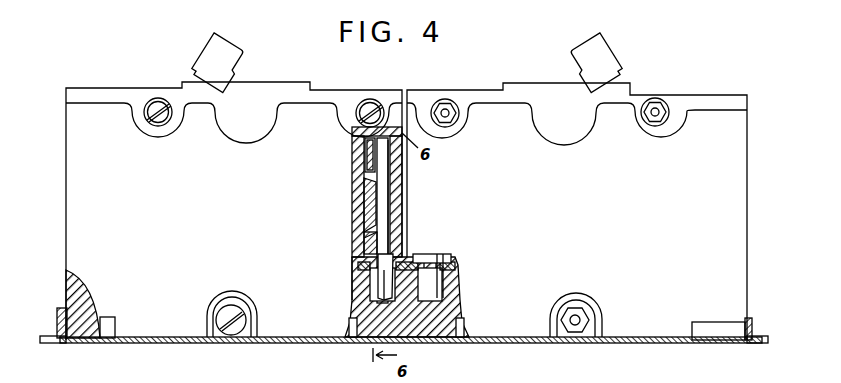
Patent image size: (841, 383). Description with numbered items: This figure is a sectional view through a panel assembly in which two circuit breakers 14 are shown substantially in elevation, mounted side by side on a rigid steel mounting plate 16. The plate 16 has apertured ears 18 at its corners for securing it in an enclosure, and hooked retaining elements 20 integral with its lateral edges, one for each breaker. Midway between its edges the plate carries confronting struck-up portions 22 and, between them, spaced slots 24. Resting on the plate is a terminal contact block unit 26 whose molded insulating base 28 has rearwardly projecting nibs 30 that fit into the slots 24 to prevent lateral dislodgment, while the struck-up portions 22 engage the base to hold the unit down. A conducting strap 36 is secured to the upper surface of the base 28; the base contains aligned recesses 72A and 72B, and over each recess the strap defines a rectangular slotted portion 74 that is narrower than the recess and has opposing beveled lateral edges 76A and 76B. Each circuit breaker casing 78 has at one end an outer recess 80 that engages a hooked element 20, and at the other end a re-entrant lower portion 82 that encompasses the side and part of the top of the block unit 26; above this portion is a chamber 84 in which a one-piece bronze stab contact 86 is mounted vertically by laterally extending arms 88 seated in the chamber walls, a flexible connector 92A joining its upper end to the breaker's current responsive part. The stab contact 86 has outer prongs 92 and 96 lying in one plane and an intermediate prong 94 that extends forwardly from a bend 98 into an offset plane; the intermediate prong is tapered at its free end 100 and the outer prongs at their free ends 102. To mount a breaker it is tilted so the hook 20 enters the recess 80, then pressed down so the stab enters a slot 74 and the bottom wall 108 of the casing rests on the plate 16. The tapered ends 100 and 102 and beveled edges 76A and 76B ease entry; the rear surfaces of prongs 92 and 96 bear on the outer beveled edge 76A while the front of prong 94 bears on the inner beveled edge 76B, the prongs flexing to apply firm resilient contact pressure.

The circuit breaker 14 is at (295, 79).
The mounting plate 16 is at (115, 348).
The apertured ears 18 is at (43, 344).
The hooked retaining element 20 is at (58, 322).
The struck-up portion 22 is at (352, 327).
The slot 24 is at (418, 340).
The terminal contact block unit 26 is at (354, 310).
The insulating base 28 is at (447, 310).
The nib 30 is at (422, 343).
The conducting strap 36 is at (455, 268).
The recess 72A is at (376, 300).
The recess 72B is at (444, 300).
The slotted portion 74 is at (430, 262).
The outer beveled edge 76A is at (444, 262).
The inner beveled edge 76B is at (437, 260).
The circuit breaker casing 78 is at (72, 228).
The outer recess 80 is at (66, 304).
The re-entrant lower portion 82 is at (356, 270).
The chamber 84 is at (356, 186).
The stab contact 86 is at (392, 216).
The laterally extending arms 88 is at (393, 190).
The outer prong 92 is at (366, 236).
The flexible connector 92A is at (368, 220).
The intermediate prong 94 is at (389, 228).
The outer prong 96 is at (458, 281).
The bend 98 is at (372, 206).
The tapered free end portion 100 is at (382, 283).
The tapered free end portion 102 is at (381, 292).
The bottom wall 108 is at (184, 343).